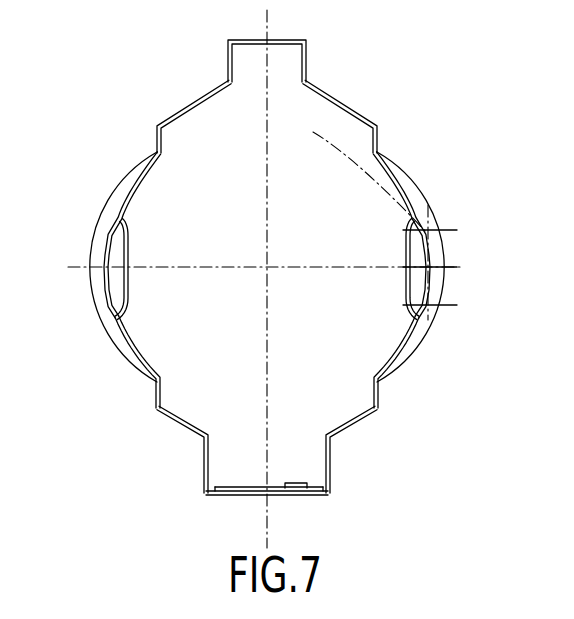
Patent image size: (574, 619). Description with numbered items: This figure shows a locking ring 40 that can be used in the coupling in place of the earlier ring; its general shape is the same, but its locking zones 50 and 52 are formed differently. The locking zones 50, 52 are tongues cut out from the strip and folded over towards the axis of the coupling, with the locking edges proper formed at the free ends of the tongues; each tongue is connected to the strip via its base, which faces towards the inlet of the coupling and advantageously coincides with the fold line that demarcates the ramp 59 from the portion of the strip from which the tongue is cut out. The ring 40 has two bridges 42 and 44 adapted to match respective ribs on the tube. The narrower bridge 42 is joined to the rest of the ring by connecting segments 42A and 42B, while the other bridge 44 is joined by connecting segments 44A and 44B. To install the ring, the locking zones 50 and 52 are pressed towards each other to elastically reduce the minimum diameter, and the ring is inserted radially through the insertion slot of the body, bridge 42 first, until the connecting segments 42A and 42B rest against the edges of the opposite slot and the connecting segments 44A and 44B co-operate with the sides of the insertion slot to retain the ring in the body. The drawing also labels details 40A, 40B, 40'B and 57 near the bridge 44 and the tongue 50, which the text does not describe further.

The locking ring 40 is at (282, 231).
The base plate 40A is at (233, 483).
The base plate edge 40B is at (240, 497).
The base plate projection 40'B is at (300, 456).
The bridge 42 is at (247, 37).
The connecting segment 42A is at (317, 82).
The connecting segment 42B is at (181, 106).
The bridge 44 is at (288, 497).
The connecting segment 44A is at (353, 430).
The connecting segment 44B is at (180, 427).
The locking zone 50 is at (408, 253).
The locking zone 52 is at (128, 242).
The right wall section 57 is at (417, 198).
The ramp 59 is at (90, 232).